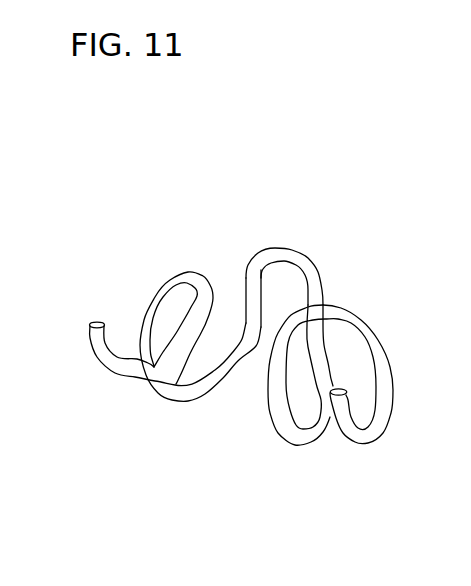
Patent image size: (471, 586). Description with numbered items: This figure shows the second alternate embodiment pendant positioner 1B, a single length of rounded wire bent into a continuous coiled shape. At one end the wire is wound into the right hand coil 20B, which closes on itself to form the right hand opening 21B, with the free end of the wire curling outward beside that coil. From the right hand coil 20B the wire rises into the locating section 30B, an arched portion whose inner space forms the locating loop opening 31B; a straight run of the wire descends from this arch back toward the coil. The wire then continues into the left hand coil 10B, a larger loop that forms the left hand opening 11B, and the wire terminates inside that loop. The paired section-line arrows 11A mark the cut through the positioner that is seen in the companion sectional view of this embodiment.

The pendant positioner 1B is at (251, 281).
The right hand opening 21B is at (142, 303).
The right hand coil 20B is at (148, 397).
The locating loop opening 31B is at (278, 300).
The locating section 30B is at (288, 257).
The left hand coil 10B is at (298, 436).
The left hand opening 11B is at (353, 368).
The section line 11A- 11A is at (50, 335).